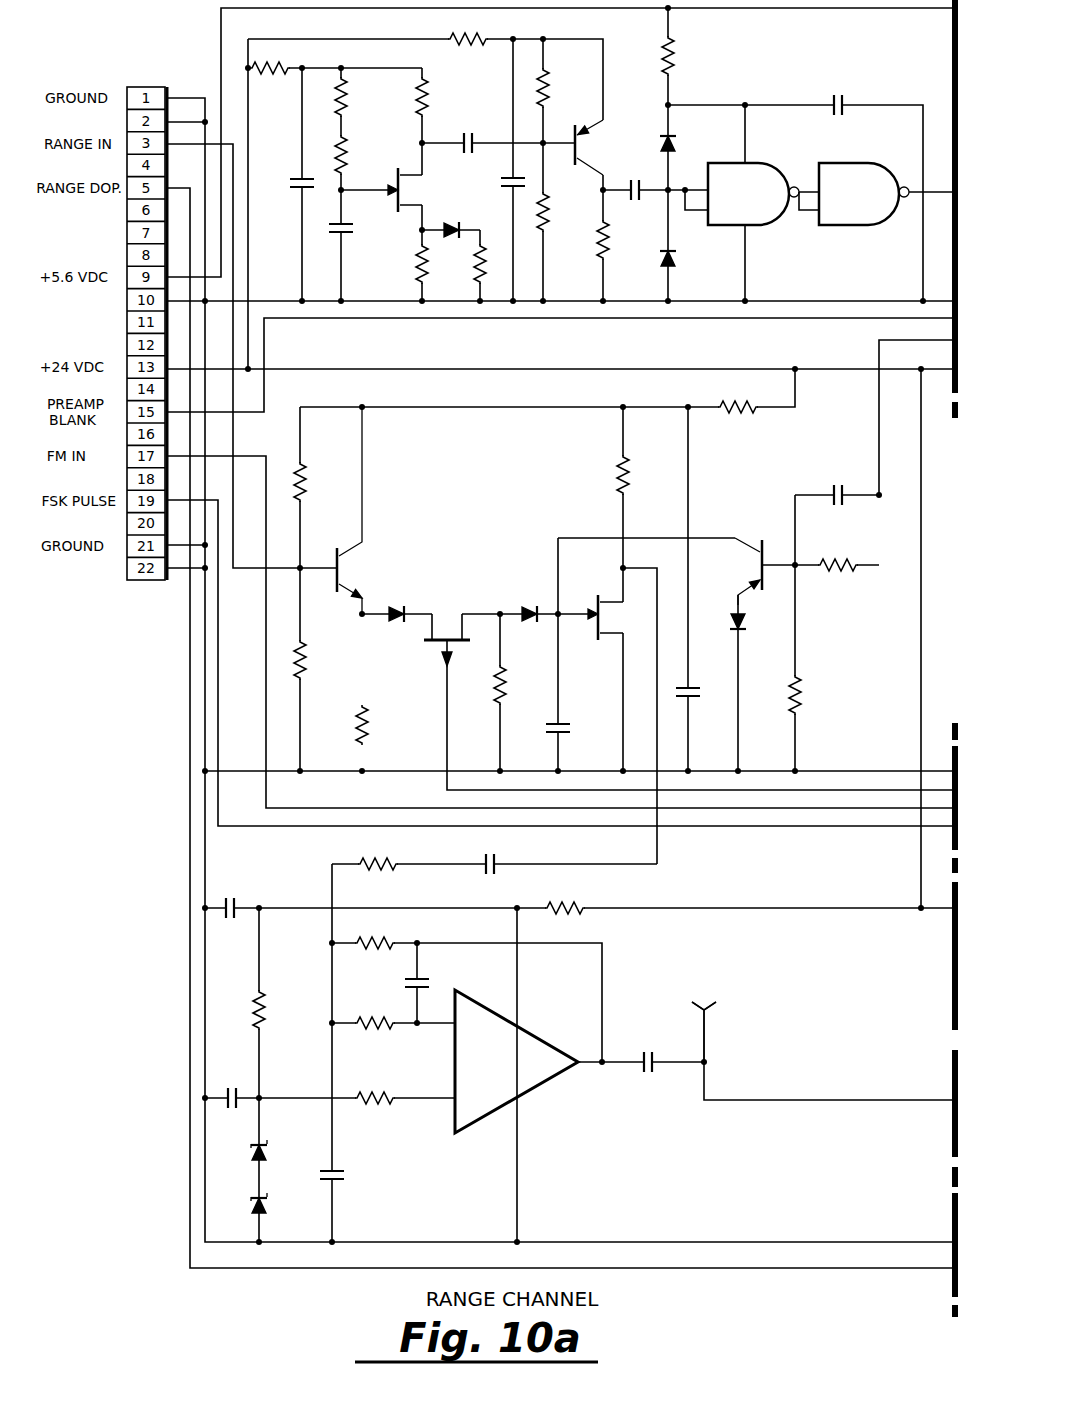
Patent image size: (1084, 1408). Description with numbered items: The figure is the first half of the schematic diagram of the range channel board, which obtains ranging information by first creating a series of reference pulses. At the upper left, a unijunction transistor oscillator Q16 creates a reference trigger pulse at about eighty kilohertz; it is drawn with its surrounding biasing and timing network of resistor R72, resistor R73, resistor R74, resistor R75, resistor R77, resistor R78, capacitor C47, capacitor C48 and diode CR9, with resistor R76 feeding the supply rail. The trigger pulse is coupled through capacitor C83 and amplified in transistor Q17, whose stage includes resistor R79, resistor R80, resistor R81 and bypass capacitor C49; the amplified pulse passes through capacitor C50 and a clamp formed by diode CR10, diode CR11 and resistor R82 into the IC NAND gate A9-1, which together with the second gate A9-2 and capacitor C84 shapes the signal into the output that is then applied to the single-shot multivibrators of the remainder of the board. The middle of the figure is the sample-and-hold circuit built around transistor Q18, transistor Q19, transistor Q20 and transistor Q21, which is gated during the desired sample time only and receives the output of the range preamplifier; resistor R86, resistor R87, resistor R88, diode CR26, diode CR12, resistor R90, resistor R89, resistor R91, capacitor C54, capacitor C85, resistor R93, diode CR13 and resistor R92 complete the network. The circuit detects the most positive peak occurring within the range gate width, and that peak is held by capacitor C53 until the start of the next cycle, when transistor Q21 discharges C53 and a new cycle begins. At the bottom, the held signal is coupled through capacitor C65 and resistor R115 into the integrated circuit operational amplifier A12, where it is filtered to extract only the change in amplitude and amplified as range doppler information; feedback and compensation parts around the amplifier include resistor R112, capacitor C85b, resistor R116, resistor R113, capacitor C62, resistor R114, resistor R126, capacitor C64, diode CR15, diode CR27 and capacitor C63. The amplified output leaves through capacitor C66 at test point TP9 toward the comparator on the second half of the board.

The resistor R72 470 R72 is at (270, 67).
The resistor R76 100 R76 is at (468, 39).
The capacitor C47 6.8 C47 is at (287, 179).
The resistor R73 200 R73 is at (357, 97).
The resistor R74 10K R74 is at (357, 155).
The capacitor C48 1000pf C48 is at (366, 222).
The resistor R75 510 R75 is at (437, 97).
The capacitor C83 0.1 C83 is at (481, 132).
The unijunction transistor oscillator Q16 is at (416, 190).
The diode CR9 is at (470, 223).
The resistor R77 51 R77 is at (404, 264).
The resistor R78 10K R78 is at (463, 264).
The capacitor C49 6.8 C49 is at (498, 181).
The resistor R79 200 R79 is at (559, 88).
The resistor R80 10K R80 is at (559, 212).
The transistor Q17 is at (601, 147).
The capacitor C50 0.1 C50 is at (636, 178).
The resistor R81 10K R81 is at (619, 241).
The resistor R82 10 R82 is at (686, 56).
The diode CR10 is at (690, 133).
The diode CR11 is at (690, 257).
The capacitor C84 40 C84 is at (840, 88).
The NAND gate A9-1 is at (746, 192).
The NAND gate A9-2 is at (856, 196).
The resistor R86 10K R86 is at (316, 482).
The resistor R87 10K R87 is at (316, 660).
The resistor R88 10K R88 is at (379, 725).
The transistor Q18 is at (359, 510).
The diode CR26 is at (390, 623).
The transistor Q19 is at (447, 630).
The diode CR12 is at (532, 603).
The resistor R90 3.9K R90 is at (518, 685).
The capacitor C53 is at (574, 732).
The transistor Q20 is at (614, 617).
The resistor R89 8.9K R89 is at (642, 475).
The capacitor C54 40 C54 is at (699, 711).
The resistor R91 50 R91 is at (738, 426).
The capacitor C85 100pf C85 is at (835, 476).
The transistor Q21 is at (744, 571).
The resistor R93 1K R93 is at (838, 582).
The diode CR13 is at (754, 634).
The resistor R92 2K R92 is at (812, 695).
The capacitor C65 6.8 C65 is at (228, 889).
The resistor R112 8.2K R112 is at (378, 864).
The capacitor C85 47 C85b is at (505, 853).
The resistor R116 470 R116 is at (567, 906).
The resistor R113 470K R113 is at (375, 941).
The capacitor C62 .001 C62 is at (435, 971).
The resistor R126 3K R126 is at (280, 1010).
The resistor R114 8.2K R114 is at (376, 1021).
The resistor R115 5.1K R115 is at (375, 1096).
The capacitor C64 10 C64 is at (225, 1079).
The zener diode CR15 is at (276, 1140).
The zener diode CR27 is at (276, 1214).
The capacitor C63 .122 C63 is at (351, 1182).
The integrated circuit operational amplifier A12 is at (519, 1061).
The capacitor C66 47 C66 is at (645, 1044).
The test point TP9 is at (701, 1021).